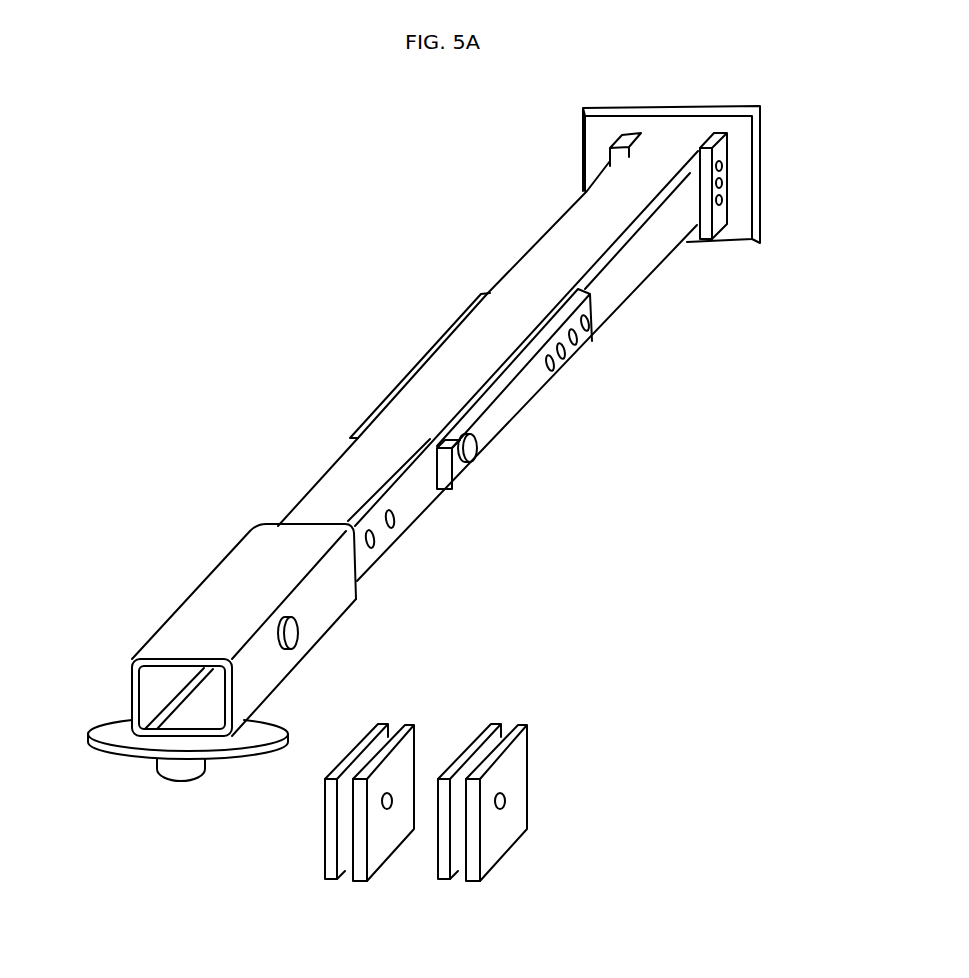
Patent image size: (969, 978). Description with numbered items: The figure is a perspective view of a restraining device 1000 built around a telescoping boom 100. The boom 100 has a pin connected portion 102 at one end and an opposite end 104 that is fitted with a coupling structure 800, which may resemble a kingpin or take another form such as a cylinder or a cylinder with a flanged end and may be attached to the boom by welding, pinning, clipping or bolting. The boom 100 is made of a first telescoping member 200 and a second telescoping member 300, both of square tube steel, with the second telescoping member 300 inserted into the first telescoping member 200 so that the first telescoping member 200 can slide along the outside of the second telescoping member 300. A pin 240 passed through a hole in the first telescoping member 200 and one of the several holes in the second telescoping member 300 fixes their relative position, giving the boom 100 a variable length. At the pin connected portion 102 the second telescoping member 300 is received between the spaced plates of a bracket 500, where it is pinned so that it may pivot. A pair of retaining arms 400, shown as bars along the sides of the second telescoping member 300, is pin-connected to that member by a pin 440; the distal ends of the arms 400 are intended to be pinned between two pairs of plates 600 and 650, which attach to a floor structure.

The restraining device 1000 is at (305, 305).
The boom 100 is at (235, 343).
The pin connected portion 102 is at (553, 150).
The end 104 is at (95, 668).
The first telescoping member 200 is at (200, 612).
The pin 240 is at (300, 632).
The second telescoping member 300 is at (340, 472).
The retaining arms 400 is at (420, 362).
The pin 440 is at (476, 453).
The bracket 500 is at (777, 165).
The pair of plates 600 is at (566, 758).
The pair of plates 650 is at (282, 873).
The coupling structure 800 is at (163, 765).